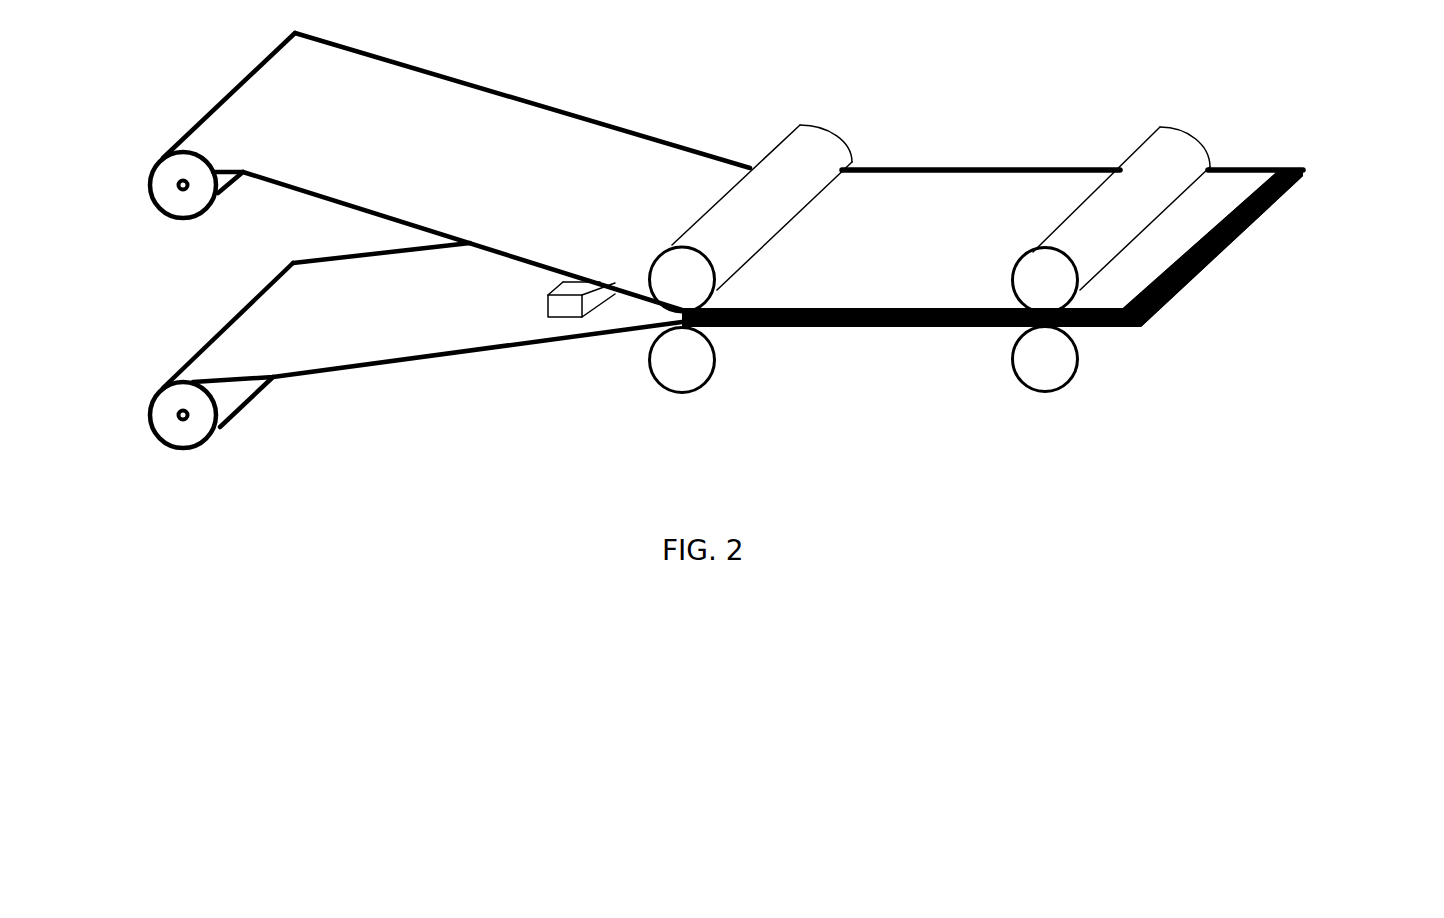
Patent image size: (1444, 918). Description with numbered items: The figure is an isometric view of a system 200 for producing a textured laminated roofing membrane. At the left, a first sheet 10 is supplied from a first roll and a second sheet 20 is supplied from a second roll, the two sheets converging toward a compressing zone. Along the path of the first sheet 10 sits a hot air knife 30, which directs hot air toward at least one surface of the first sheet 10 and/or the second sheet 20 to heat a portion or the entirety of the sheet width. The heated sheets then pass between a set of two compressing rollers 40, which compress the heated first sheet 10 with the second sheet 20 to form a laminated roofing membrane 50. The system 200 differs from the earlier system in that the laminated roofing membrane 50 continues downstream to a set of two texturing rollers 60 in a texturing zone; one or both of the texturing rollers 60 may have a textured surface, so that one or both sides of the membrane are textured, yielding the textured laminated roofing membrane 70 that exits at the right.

The first sheet 10 is at (183, 199).
The second sheet 20 is at (194, 434).
The hot air knife 30 is at (559, 330).
The compressing rollers 40 is at (695, 364).
The laminated roofing membrane 50 is at (903, 220).
The texturing rollers 60 is at (1062, 371).
The textured laminated roofing membrane 70 is at (1241, 179).
The system 200 is at (754, 280).